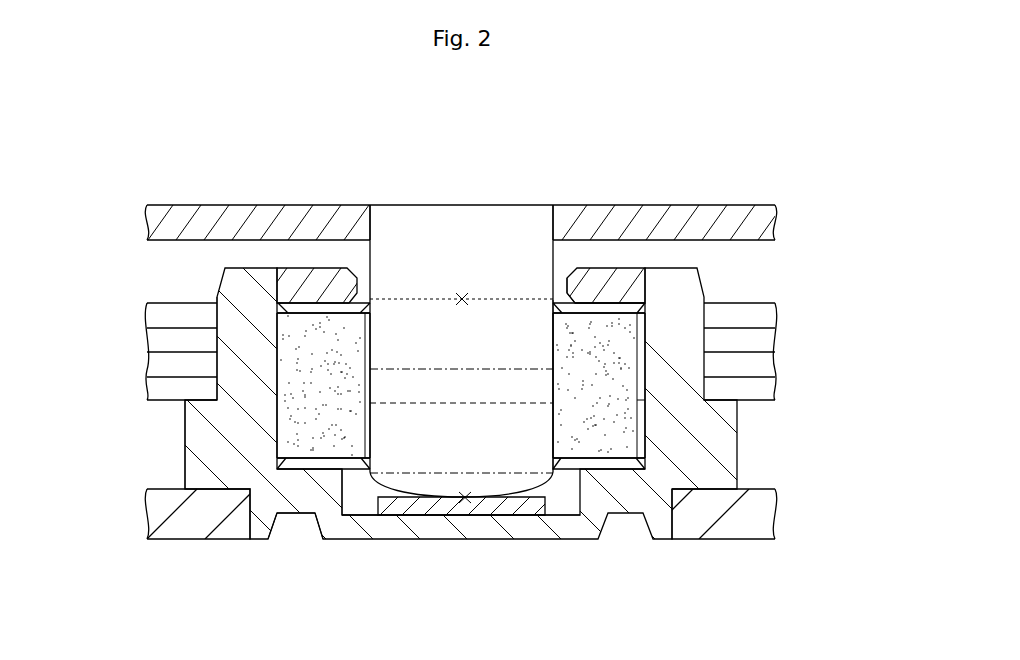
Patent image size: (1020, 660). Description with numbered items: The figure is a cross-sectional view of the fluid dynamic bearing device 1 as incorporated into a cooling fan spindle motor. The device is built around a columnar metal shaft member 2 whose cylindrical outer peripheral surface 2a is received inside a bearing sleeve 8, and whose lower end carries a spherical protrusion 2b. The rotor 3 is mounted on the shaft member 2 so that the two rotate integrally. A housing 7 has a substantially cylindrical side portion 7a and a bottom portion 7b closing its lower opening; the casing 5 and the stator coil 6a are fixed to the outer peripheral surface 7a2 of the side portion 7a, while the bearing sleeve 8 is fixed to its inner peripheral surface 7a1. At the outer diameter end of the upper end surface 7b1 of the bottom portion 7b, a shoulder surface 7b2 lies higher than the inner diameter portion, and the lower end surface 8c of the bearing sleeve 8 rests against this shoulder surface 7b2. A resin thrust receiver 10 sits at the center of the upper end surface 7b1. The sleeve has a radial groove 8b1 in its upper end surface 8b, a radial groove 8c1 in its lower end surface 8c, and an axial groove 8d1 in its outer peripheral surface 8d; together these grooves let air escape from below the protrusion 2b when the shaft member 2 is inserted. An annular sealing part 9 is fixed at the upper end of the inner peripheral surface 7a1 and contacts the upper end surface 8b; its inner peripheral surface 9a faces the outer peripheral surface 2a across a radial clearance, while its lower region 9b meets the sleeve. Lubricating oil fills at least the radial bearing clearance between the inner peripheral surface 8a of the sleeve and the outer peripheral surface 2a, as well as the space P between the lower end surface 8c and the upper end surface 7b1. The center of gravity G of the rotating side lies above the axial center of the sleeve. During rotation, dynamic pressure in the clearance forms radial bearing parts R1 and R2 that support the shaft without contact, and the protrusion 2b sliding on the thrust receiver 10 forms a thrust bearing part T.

The fluid dynamic bearing device 1 is at (689, 168).
The shaft member 2 is at (493, 228).
The outer peripheral surface 2a is at (555, 381).
The protrusion 2b is at (385, 498).
The rotor 3 is at (218, 214).
The casing 5 is at (187, 526).
The stator coil 6a is at (179, 310).
The housing 7 is at (751, 473).
The side portion 7a is at (202, 455).
The inner peripheral surface 7a1 is at (283, 368).
The outer peripheral surface 7a2 is at (187, 423).
The bottom portion 7b is at (523, 528).
The upper end surface 7b1 is at (345, 499).
The shoulder surface 7b2 is at (273, 478).
The bearing sleeve 8 is at (297, 407).
The inner peripheral surface 8a is at (372, 352).
The upper end surface 8b is at (594, 308).
The radial groove 8b1 is at (313, 306).
The lower end surface 8c is at (613, 470).
The radial groove 8c1 is at (326, 468).
The outer peripheral surface 8d is at (641, 346).
The axial groove 8d1 is at (639, 412).
The sealing part 9 is at (335, 278).
The inner peripheral surface 9a is at (565, 288).
The retaining ring lower surface 9b is at (632, 312).
The thrust receiver 10 is at (427, 507).
The center of gravity G is at (462, 293).
The space P is at (563, 498).
The radial bearing part R1 is at (571, 338).
The radial bearing part R2 is at (569, 442).
The thrust bearing part T is at (468, 503).